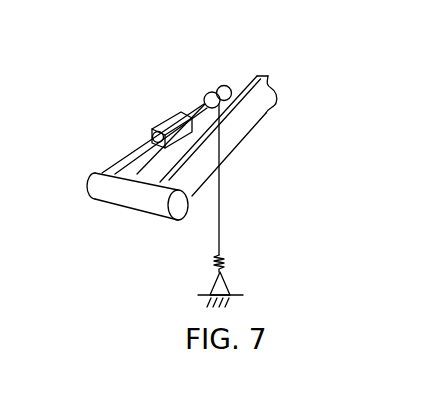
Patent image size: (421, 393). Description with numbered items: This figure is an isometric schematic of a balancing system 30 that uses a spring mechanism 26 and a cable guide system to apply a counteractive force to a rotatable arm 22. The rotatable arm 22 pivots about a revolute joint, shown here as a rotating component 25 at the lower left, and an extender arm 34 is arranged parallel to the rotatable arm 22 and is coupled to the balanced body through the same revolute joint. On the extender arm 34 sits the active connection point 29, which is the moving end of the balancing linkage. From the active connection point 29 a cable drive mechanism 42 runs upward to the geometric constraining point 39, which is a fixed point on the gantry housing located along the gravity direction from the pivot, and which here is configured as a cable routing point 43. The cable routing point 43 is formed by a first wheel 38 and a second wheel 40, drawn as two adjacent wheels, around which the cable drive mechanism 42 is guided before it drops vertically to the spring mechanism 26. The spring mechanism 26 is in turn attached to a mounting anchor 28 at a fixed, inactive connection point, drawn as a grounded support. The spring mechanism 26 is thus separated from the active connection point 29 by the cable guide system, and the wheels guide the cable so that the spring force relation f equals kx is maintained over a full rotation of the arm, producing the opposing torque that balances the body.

The balancing system 30 is at (113, 45).
The rotatable arm 22 is at (266, 116).
The rotating component 25 is at (100, 188).
The extender arm 34 is at (118, 160).
The active connection point 29 is at (150, 128).
The geometric constraining point 39 is at (215, 64).
The cable routing point 43 is at (213, 59).
The second wheel 40 is at (211, 91).
The first wheel 38 is at (225, 85).
The cable drive mechanism 42 is at (220, 222).
The spring mechanism 26 is at (225, 257).
The mounting anchor 28 is at (230, 283).